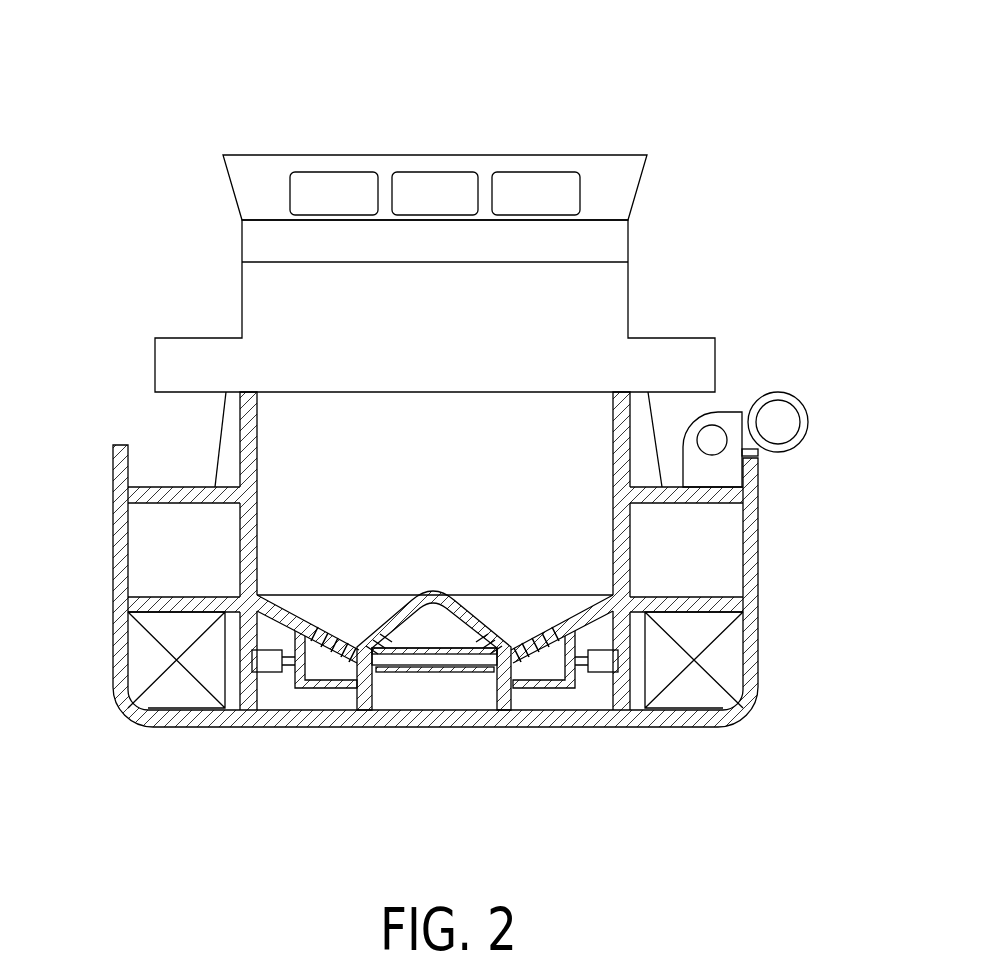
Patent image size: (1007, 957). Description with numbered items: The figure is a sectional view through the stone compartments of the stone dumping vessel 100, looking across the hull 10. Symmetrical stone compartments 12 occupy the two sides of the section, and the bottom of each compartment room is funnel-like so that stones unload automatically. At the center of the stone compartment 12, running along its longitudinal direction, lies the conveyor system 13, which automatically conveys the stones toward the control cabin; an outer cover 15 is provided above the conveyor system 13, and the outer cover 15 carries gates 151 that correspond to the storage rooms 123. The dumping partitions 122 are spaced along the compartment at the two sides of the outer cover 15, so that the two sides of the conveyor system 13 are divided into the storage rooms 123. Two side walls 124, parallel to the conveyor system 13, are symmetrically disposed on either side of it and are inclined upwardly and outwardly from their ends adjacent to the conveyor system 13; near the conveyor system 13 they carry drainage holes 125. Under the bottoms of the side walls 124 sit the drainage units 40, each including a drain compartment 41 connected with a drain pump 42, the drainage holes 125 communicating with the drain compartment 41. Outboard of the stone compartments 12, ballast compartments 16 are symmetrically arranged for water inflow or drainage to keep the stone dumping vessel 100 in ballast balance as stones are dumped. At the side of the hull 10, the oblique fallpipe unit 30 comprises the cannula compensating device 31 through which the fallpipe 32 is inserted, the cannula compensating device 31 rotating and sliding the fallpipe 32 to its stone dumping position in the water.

The stone dumping vessel 100 is at (190, 97).
The hull 10 is at (110, 522).
The stone compartment 12 is at (238, 528).
The ballast compartment 16 is at (233, 672).
The dumping partition 122 is at (262, 585).
The storage room 123 is at (547, 617).
The side wall 124 is at (260, 617).
The drainage hole 125 is at (340, 647).
The gate 151 is at (533, 638).
The conveyor system 13 is at (442, 670).
The outer cover 15 is at (508, 678).
The drainage unit 40 is at (305, 688).
The drain compartment 41 is at (335, 685).
The drain pump 42 is at (266, 662).
The oblique fallpipe unit 30 is at (744, 410).
The cannula compensating device 31 is at (745, 438).
The fallpipe 32 is at (780, 413).